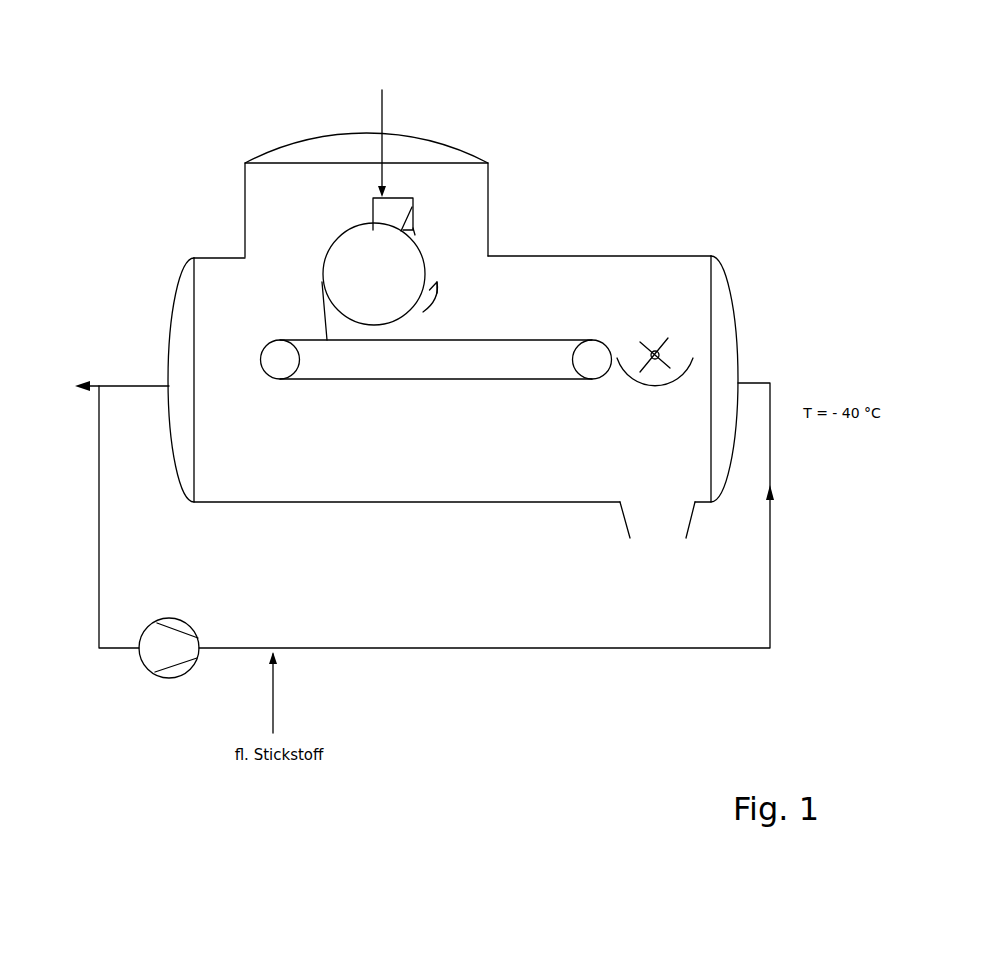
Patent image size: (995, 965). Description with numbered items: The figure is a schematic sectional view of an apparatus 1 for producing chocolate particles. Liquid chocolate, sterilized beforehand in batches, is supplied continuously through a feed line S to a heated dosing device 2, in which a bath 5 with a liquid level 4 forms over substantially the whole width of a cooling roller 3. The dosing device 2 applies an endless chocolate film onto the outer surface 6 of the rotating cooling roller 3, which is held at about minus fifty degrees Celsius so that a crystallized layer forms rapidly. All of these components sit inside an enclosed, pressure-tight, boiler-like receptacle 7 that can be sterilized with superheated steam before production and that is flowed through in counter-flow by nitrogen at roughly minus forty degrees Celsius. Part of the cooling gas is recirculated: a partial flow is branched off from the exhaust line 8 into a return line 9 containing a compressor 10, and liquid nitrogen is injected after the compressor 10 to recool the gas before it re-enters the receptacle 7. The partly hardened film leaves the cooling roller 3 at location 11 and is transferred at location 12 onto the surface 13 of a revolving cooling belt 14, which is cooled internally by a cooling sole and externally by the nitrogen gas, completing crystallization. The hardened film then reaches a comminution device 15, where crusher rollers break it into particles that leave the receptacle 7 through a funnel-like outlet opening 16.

The apparatus 1 is at (237, 120).
The feed line S is at (383, 117).
The heated dosing device 2 is at (403, 192).
The cooling roller 3 is at (395, 257).
The liquid level 4 is at (413, 210).
The bath 5 is at (415, 235).
The outer surface 6 is at (343, 230).
The receptacle 7 is at (698, 255).
The exhaust line 8 is at (137, 385).
The return line 9 is at (98, 598).
The compressor 10 is at (173, 680).
The location 11 is at (322, 280).
The location 12 is at (328, 340).
The surface 13 is at (552, 338).
The cooling belt 14 is at (452, 336).
The comminution device 15 is at (685, 348).
The outlet opening 16 is at (660, 532).